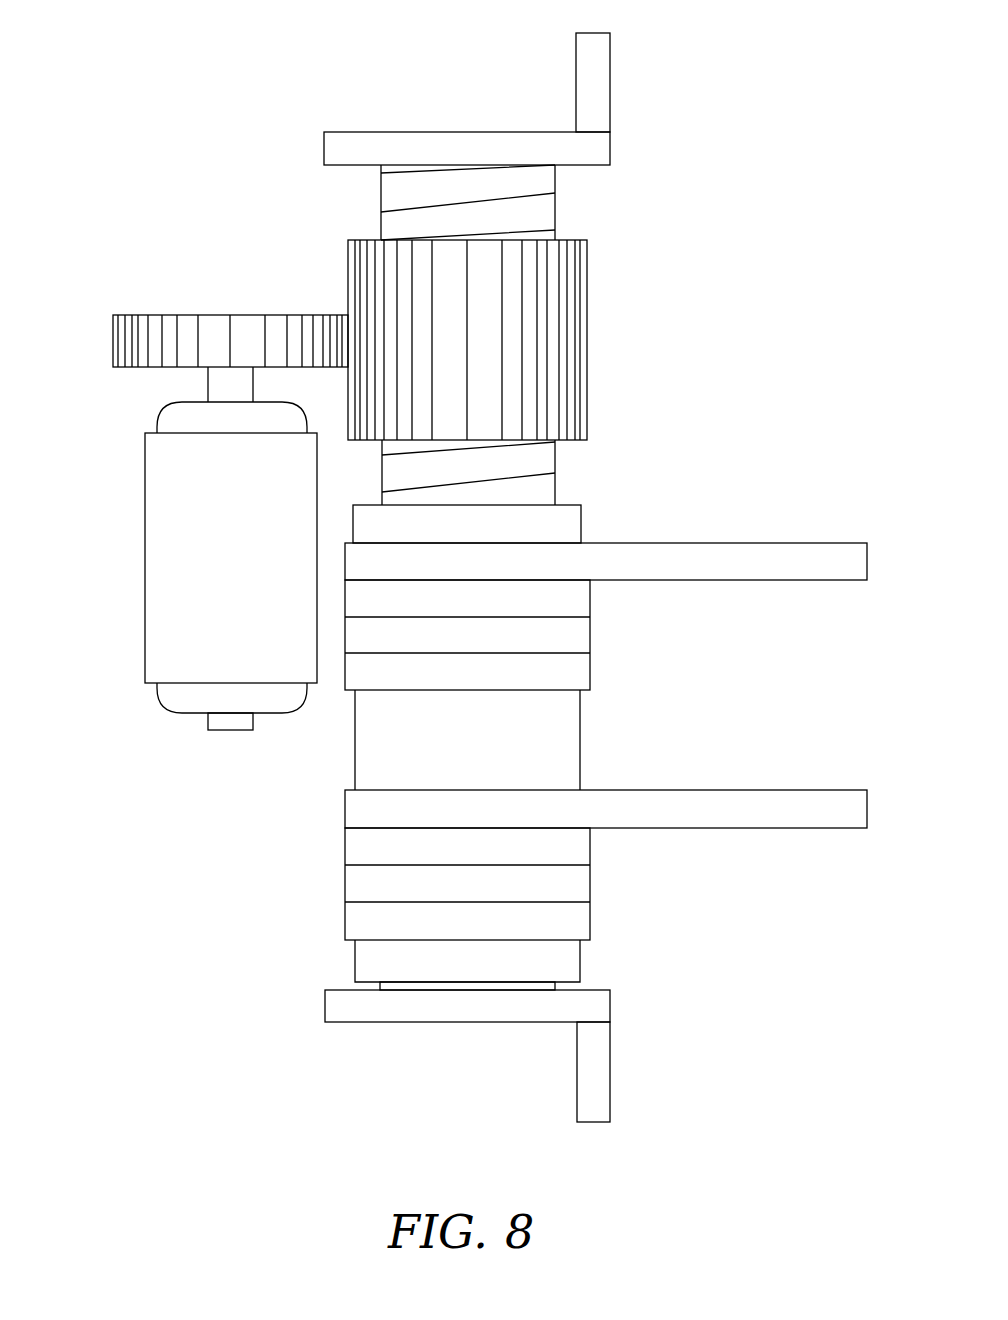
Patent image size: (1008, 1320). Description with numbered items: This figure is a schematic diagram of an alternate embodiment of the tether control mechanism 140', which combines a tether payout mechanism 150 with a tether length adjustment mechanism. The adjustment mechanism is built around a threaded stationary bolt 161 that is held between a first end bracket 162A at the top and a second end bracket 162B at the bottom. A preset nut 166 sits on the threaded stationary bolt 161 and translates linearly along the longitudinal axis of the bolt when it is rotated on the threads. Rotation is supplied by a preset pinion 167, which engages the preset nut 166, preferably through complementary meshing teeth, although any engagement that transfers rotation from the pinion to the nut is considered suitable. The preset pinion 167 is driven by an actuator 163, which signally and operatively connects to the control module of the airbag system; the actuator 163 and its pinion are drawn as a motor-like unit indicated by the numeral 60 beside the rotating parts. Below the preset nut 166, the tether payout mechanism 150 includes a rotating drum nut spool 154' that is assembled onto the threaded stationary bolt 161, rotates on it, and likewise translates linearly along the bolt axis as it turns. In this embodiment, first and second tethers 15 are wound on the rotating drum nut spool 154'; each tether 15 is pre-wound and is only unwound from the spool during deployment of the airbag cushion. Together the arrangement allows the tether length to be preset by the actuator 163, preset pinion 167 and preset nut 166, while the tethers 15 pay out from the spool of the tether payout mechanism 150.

The first end bracket 162A is at (576, 82).
The threaded stationary bolt 161 is at (556, 212).
The preset nut 166 is at (588, 360).
The preset pinion 167 is at (210, 313).
The actuator 163 is at (145, 605).
The motor assembly 60 is at (178, 730).
The rotating drum nut spool 154' is at (546, 505).
The tether 15 is at (690, 583).
The tether control mechanism 140' is at (424, 1044).
The tether payout mechanism 150 is at (504, 1033).
The second end bracket 162B is at (610, 1073).